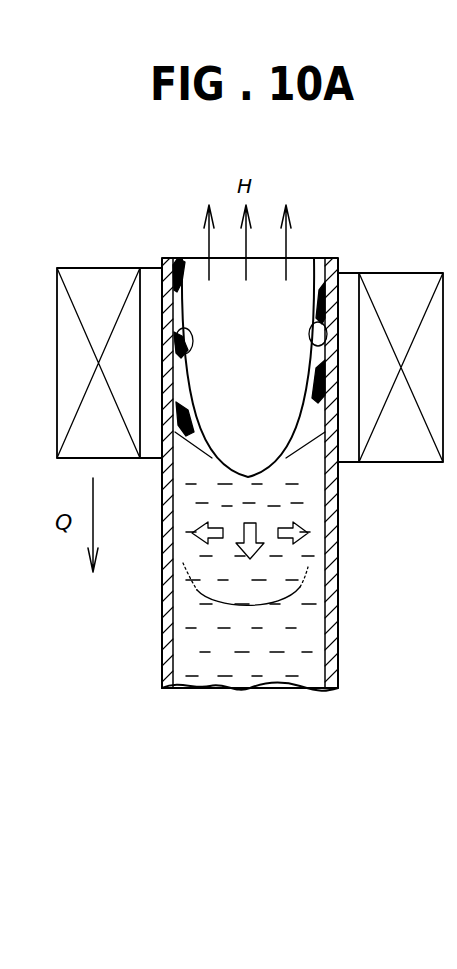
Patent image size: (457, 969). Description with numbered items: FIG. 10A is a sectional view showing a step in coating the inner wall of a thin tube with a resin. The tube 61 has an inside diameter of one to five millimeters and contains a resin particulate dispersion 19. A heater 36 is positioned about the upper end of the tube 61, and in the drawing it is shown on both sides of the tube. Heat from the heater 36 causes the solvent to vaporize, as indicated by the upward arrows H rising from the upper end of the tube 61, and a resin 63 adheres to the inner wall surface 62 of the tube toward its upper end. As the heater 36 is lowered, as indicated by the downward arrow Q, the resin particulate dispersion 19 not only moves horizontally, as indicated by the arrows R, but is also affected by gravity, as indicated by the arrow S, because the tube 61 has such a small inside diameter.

The resin particulate dispersion 19 is at (310, 648).
The heater 36 is at (57, 268).
The tube 61 is at (165, 593).
The inner wall surface 62 is at (176, 330).
The resin 63 is at (190, 300).